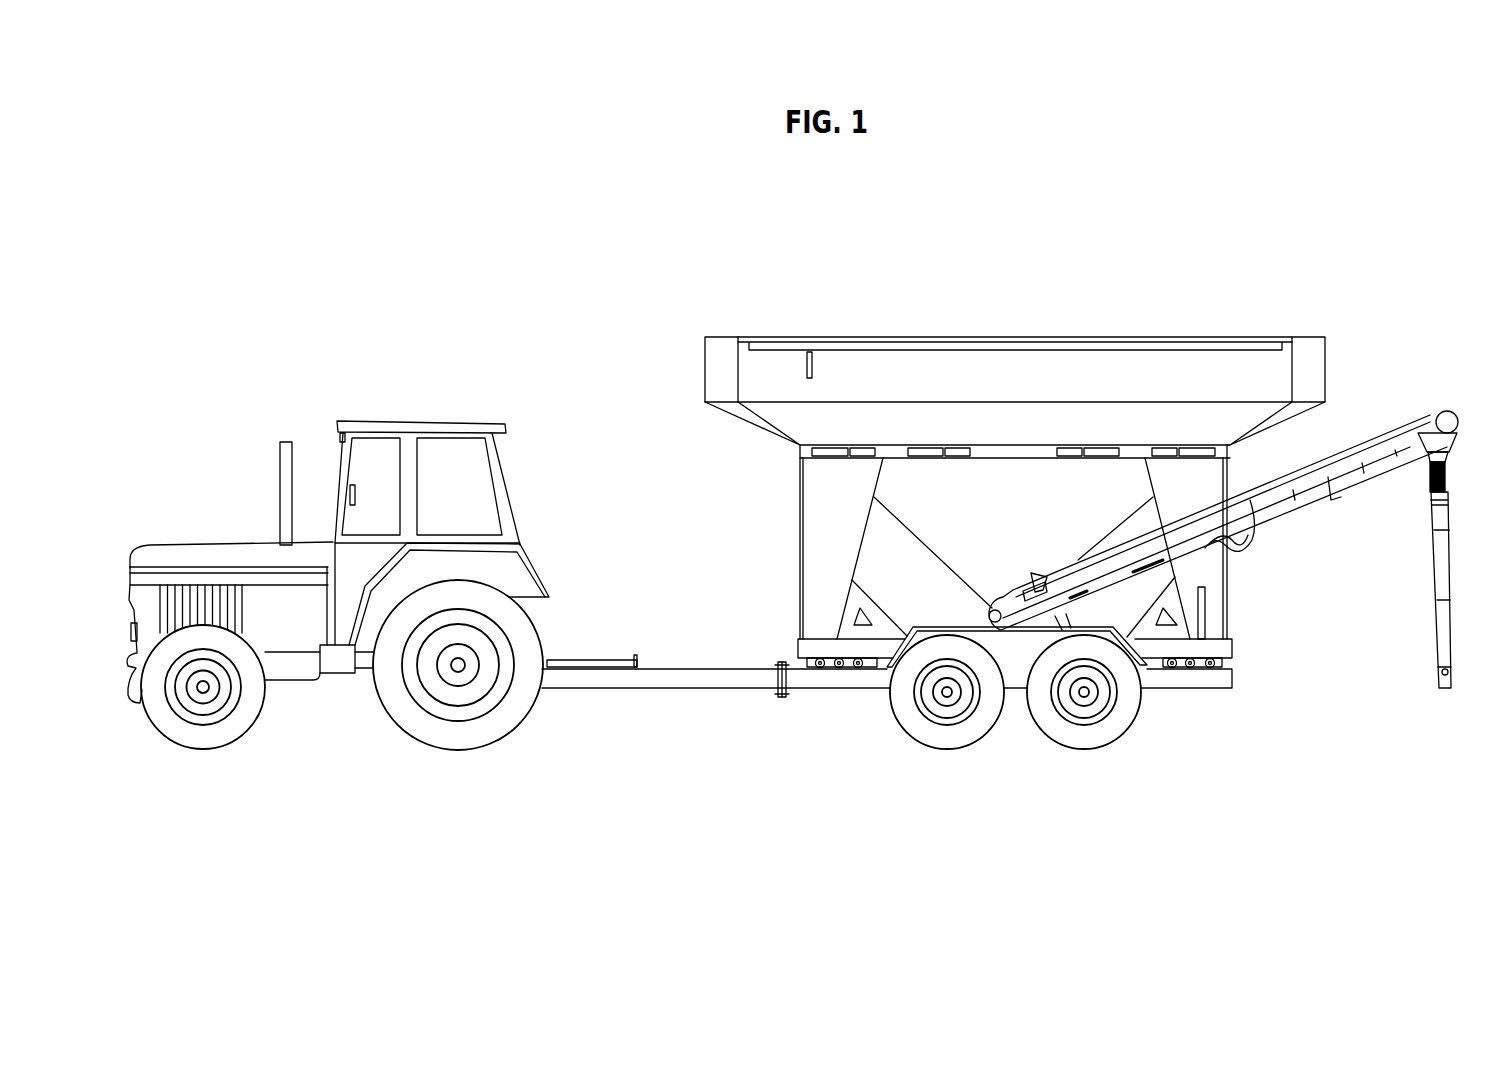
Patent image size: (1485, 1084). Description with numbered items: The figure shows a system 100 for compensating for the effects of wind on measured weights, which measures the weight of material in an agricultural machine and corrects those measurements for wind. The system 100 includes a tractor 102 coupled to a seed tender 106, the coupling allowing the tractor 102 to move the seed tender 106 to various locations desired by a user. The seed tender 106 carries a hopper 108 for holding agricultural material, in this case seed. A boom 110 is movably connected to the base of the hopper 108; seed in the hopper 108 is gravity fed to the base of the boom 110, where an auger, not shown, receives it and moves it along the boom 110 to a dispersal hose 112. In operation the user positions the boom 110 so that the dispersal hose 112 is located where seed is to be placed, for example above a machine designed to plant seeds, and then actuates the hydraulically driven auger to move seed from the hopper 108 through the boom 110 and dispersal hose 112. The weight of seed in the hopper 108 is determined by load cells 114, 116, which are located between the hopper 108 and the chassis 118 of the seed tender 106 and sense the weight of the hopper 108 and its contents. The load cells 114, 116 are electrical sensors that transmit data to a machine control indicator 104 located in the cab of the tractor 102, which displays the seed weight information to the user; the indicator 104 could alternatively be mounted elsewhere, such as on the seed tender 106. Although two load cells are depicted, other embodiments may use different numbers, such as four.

The system 100 is at (1270, 145).
The tractor 102 is at (357, 350).
The machine control indicator 104 is at (352, 525).
The seed tender 106 is at (950, 323).
The hopper 108 is at (1090, 367).
The boom 110 is at (1265, 503).
The dispersal hose 112 is at (1440, 550).
The load cell 114 is at (818, 672).
The load cell 116 is at (1192, 666).
The chassis 118 is at (865, 678).